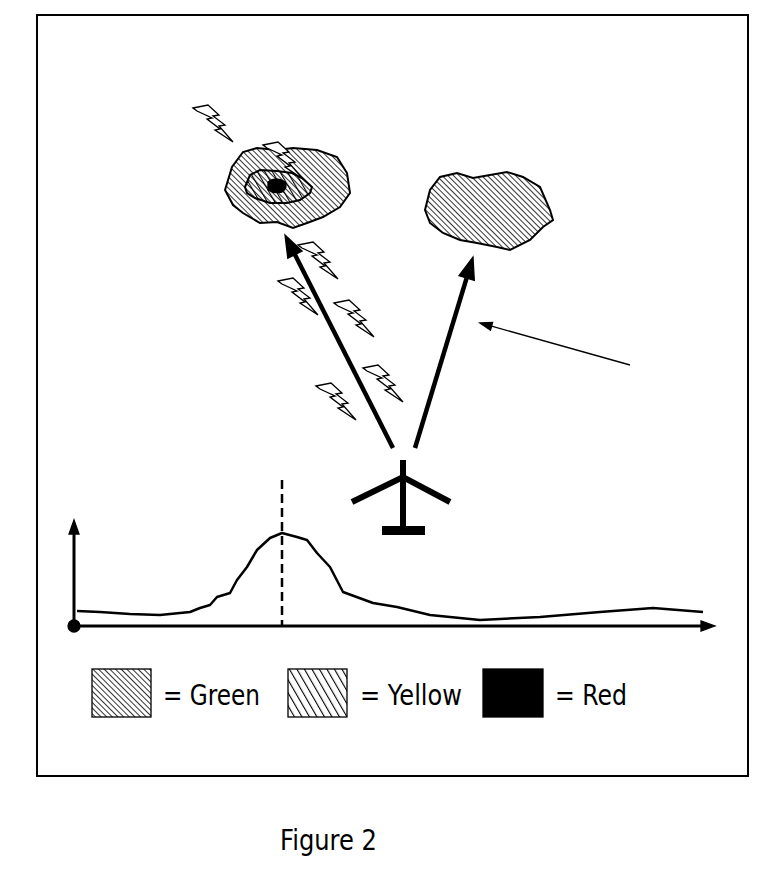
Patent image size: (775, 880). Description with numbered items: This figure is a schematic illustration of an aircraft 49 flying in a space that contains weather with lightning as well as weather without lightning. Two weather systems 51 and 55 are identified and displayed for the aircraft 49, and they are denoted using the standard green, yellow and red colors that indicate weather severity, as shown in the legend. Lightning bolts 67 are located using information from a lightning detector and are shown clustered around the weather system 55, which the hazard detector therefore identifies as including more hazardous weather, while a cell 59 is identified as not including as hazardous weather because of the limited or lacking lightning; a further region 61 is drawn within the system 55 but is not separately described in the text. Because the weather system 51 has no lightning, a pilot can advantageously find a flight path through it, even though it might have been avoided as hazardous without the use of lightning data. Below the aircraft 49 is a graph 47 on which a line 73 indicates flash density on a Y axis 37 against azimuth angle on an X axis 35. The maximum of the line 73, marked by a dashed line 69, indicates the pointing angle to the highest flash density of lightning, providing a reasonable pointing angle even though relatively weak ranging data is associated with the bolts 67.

The X axis 35 is at (640, 627).
The Y axis 37 is at (80, 562).
The graph 47 is at (554, 559).
The aircraft 49 is at (427, 480).
The weather system 51 is at (508, 172).
The weather system 55 is at (282, 187).
The cell 59 is at (338, 203).
The yellow region of weather cell 61 is at (247, 167).
The lightning bolts 67 is at (289, 322).
The dashed line 69 is at (320, 353).
The line 73 is at (437, 612).